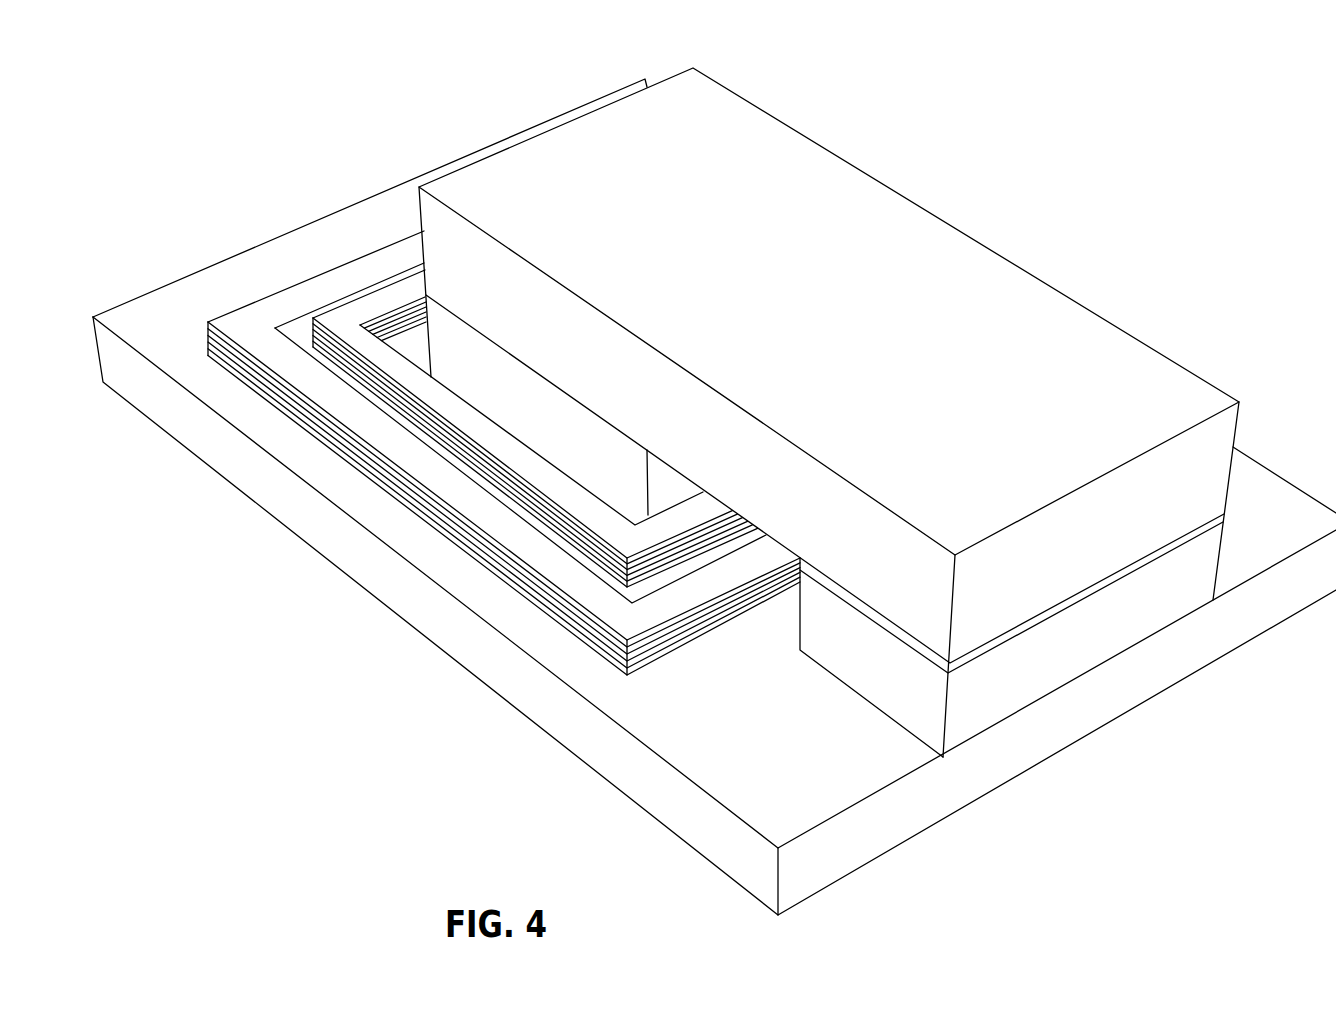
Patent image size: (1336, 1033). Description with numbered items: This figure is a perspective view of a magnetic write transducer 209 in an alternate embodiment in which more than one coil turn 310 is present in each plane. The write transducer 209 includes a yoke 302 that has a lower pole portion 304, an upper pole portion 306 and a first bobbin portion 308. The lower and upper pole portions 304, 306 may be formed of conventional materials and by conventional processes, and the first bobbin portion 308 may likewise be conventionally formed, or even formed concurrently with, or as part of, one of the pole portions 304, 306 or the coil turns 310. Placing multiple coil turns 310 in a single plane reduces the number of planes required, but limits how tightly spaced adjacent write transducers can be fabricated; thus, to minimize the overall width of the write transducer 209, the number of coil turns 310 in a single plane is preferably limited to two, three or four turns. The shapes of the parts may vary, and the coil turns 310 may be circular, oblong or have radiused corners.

The magnetic write transducer 209 is at (110, 136).
The yoke 302 is at (1047, 224).
The lower pole portion 304 is at (563, 725).
The upper pole portion 306 is at (1085, 357).
The first bobbin portion 308 is at (443, 340).
The coil turns 310 is at (337, 320).